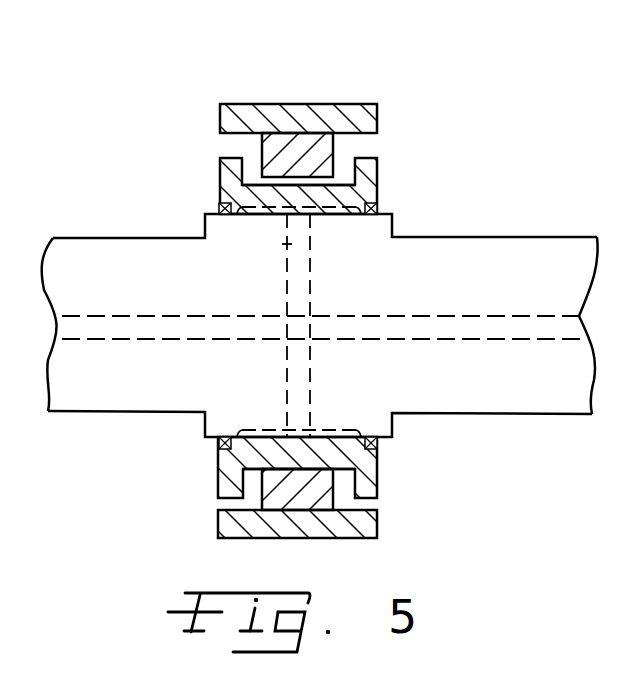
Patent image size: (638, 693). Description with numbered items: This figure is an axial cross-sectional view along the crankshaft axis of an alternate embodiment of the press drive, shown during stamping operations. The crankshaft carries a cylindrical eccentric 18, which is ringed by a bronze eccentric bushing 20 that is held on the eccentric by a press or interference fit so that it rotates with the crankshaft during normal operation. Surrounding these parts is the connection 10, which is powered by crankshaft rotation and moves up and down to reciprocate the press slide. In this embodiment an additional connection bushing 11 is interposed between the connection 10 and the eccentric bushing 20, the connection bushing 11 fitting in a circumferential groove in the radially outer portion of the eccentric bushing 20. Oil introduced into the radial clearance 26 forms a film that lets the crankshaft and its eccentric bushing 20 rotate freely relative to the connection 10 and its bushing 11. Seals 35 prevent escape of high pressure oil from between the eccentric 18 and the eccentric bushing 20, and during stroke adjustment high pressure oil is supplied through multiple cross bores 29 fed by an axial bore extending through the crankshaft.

The connection member 10 is at (365, 106).
The connection bushing 11 is at (298, 155).
The cylindrical eccentric 18 is at (405, 226).
The eccentric bushing 20 is at (207, 184).
The radial clearance 26 is at (318, 190).
The cross bores 29 is at (287, 244).
The seals 35 is at (378, 210).